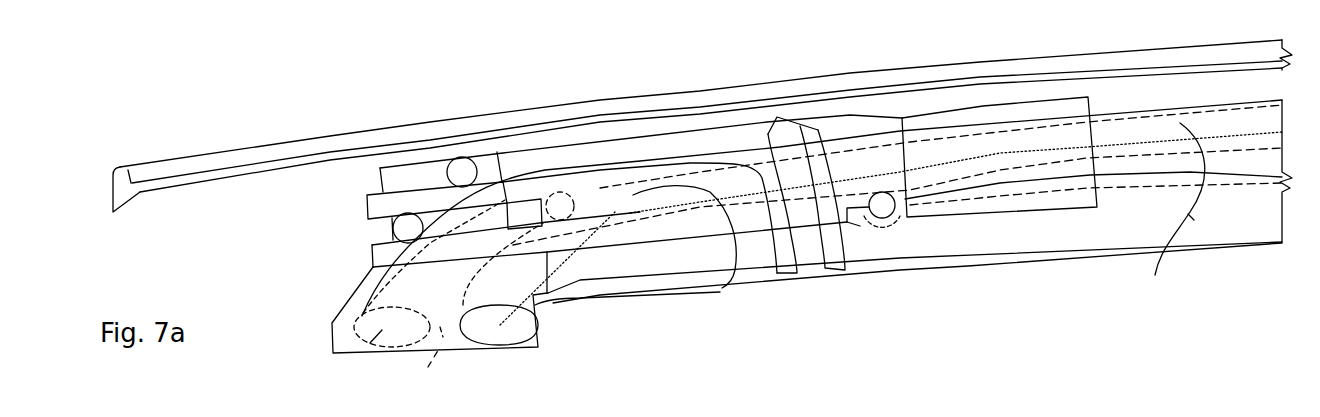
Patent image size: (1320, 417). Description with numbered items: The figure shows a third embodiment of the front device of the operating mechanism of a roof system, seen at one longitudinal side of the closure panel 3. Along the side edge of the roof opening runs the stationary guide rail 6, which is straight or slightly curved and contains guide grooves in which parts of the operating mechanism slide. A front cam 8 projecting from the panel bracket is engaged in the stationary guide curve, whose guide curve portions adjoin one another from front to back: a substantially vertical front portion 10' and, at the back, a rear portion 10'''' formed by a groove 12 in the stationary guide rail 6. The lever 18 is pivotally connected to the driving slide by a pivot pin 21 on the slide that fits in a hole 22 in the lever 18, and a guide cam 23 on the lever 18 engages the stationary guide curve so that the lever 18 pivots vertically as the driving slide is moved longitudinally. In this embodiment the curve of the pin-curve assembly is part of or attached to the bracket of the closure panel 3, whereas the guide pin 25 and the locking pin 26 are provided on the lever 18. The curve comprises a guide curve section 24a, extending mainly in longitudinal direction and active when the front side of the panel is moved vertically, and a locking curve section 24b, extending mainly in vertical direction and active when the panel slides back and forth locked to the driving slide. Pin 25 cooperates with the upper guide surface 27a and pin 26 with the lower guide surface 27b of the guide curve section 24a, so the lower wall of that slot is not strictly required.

The closure panel 3 is at (368, 142).
The stationary guide rail 6 is at (1284, 244).
The front cam 8 is at (355, 363).
The substantially vertical front portion 10' is at (424, 373).
The rear portion 10'''' is at (1172, 220).
The groove 12 is at (1191, 217).
The lever 18 is at (797, 126).
The pivot pin 21 is at (887, 205).
The hole 22 is at (882, 221).
The guide cam 23 is at (565, 190).
The guide curve section 24a is at (693, 200).
The locking curve section 24b is at (812, 245).
The guide pin 25 is at (405, 223).
The locking pin 26 is at (465, 170).
The upper guide surface 27a is at (638, 192).
The lower guide surface 27b is at (612, 172).